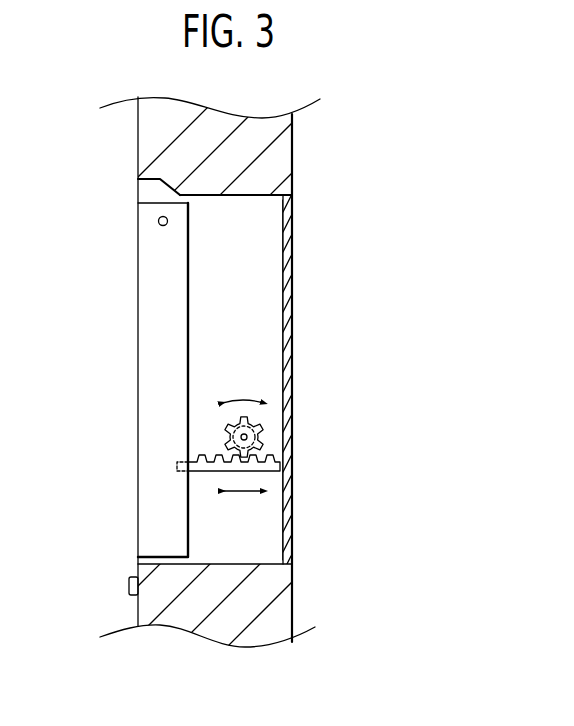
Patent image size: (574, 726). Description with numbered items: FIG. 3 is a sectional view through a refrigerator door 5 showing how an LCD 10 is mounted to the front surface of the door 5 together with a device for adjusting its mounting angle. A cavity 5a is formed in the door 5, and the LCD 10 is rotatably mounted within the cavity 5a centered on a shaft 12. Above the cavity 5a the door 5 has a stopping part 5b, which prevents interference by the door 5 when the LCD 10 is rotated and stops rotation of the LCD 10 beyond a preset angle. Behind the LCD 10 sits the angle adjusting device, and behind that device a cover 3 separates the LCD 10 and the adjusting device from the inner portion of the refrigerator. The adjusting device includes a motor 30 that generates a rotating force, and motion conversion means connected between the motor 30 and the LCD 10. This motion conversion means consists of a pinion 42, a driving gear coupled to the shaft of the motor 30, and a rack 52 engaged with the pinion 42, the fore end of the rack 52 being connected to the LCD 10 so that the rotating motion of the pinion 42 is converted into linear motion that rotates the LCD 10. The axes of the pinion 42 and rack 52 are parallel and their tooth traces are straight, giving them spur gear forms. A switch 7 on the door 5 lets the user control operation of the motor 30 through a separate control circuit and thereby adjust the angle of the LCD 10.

The cover 3 is at (293, 270).
The refrigerator door 5 is at (277, 142).
The cavity 5a is at (272, 322).
The stopping part 5b is at (160, 190).
The switch 7 is at (129, 586).
The LCD 10 is at (158, 350).
The shaft 12 is at (156, 223).
The motor 30 is at (218, 443).
The pinion 42 is at (262, 422).
The rack 52 is at (280, 467).